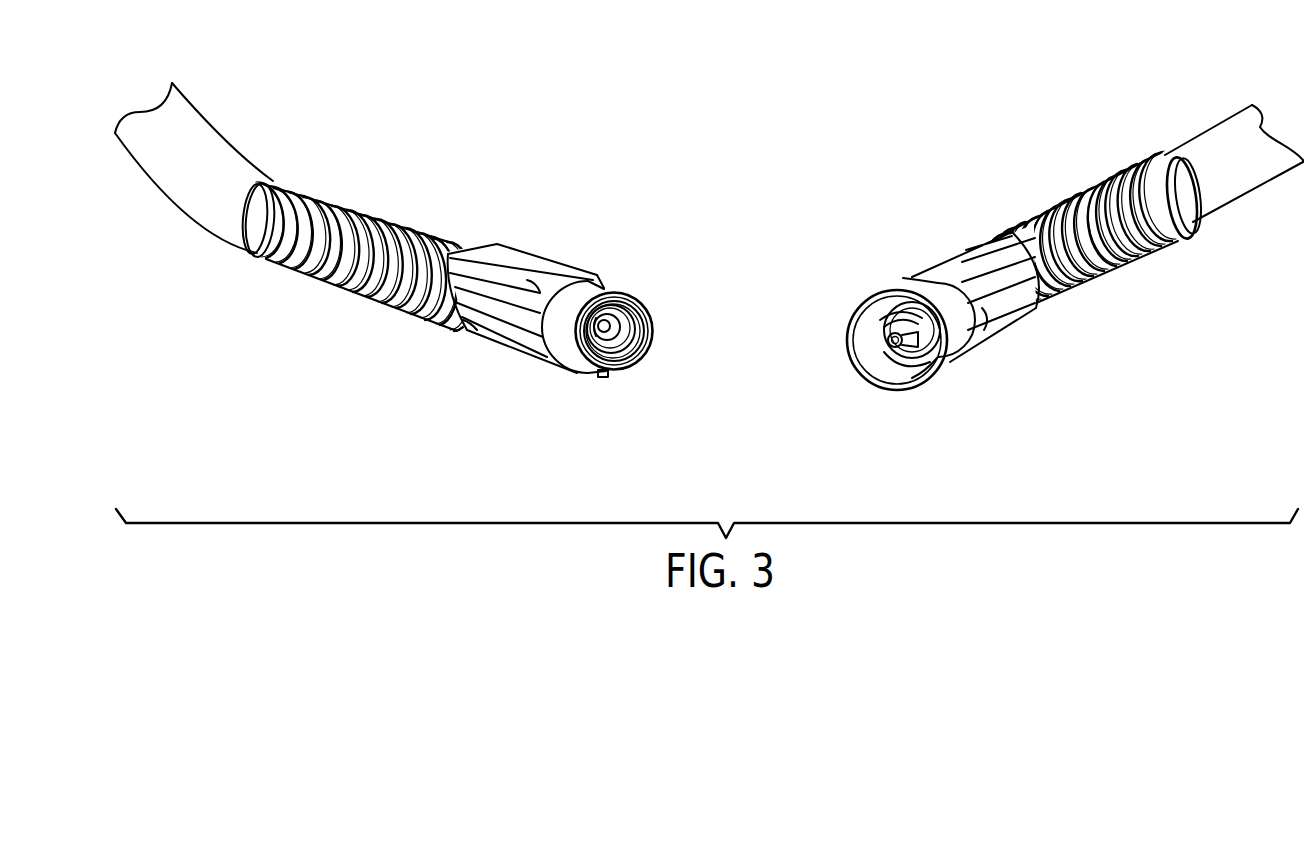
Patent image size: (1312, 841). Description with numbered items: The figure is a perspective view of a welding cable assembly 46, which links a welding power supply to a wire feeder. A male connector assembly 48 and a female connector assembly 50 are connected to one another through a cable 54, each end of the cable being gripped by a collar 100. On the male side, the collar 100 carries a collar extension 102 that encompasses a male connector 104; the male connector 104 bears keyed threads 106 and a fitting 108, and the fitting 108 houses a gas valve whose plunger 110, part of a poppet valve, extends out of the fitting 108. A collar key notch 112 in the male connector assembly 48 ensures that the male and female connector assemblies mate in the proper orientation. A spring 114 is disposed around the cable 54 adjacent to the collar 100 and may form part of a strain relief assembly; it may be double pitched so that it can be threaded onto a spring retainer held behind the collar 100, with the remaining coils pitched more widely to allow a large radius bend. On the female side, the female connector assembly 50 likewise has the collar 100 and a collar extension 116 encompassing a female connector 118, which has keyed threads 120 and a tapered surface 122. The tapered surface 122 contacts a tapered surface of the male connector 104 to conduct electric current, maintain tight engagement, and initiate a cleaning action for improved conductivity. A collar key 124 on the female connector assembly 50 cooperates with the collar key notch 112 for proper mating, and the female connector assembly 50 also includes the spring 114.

The cable assembly 46 is at (723, 116).
The male connector assembly 48 is at (1150, 392).
The female connector assembly 50 is at (498, 395).
The cable 54 is at (213, 137).
The collar 100 is at (551, 260).
The collar extension 102 is at (903, 283).
The male connector 104 is at (894, 361).
The keyed threads 106 is at (935, 338).
The fitting 108 is at (897, 322).
The plunger 110 is at (888, 340).
The collar key notch 112 is at (922, 383).
The spring 114 is at (393, 213).
The collar extension 116 is at (606, 288).
The female connector 118 is at (661, 334).
The keyed threads 120 is at (615, 345).
The tapered surface 122 is at (628, 326).
The collar key 124 is at (606, 378).